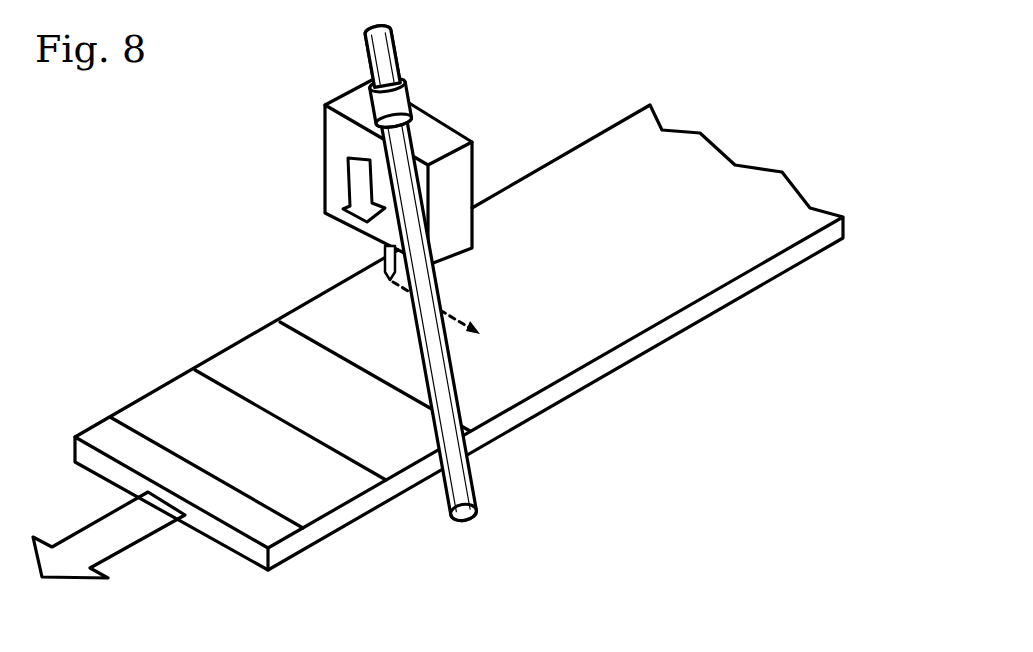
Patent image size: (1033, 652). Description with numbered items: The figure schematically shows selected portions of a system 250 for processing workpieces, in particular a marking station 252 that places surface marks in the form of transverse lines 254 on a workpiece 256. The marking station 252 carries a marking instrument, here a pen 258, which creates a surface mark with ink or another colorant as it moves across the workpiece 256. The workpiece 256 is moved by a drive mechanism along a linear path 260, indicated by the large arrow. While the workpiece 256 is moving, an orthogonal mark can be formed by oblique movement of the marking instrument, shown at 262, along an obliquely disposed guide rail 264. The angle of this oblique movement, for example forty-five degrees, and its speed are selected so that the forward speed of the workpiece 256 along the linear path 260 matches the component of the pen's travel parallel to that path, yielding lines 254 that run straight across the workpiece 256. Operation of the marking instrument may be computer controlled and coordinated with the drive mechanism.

The system 250 is at (152, 196).
The marking station 252 is at (309, 144).
The lines 254 is at (375, 272).
The workpiece 256 is at (578, 352).
The pen 258 is at (380, 258).
The linear path 260 is at (93, 538).
The oblique movement of the marking instrument 262 is at (355, 176).
The guide rail 264 is at (437, 287).